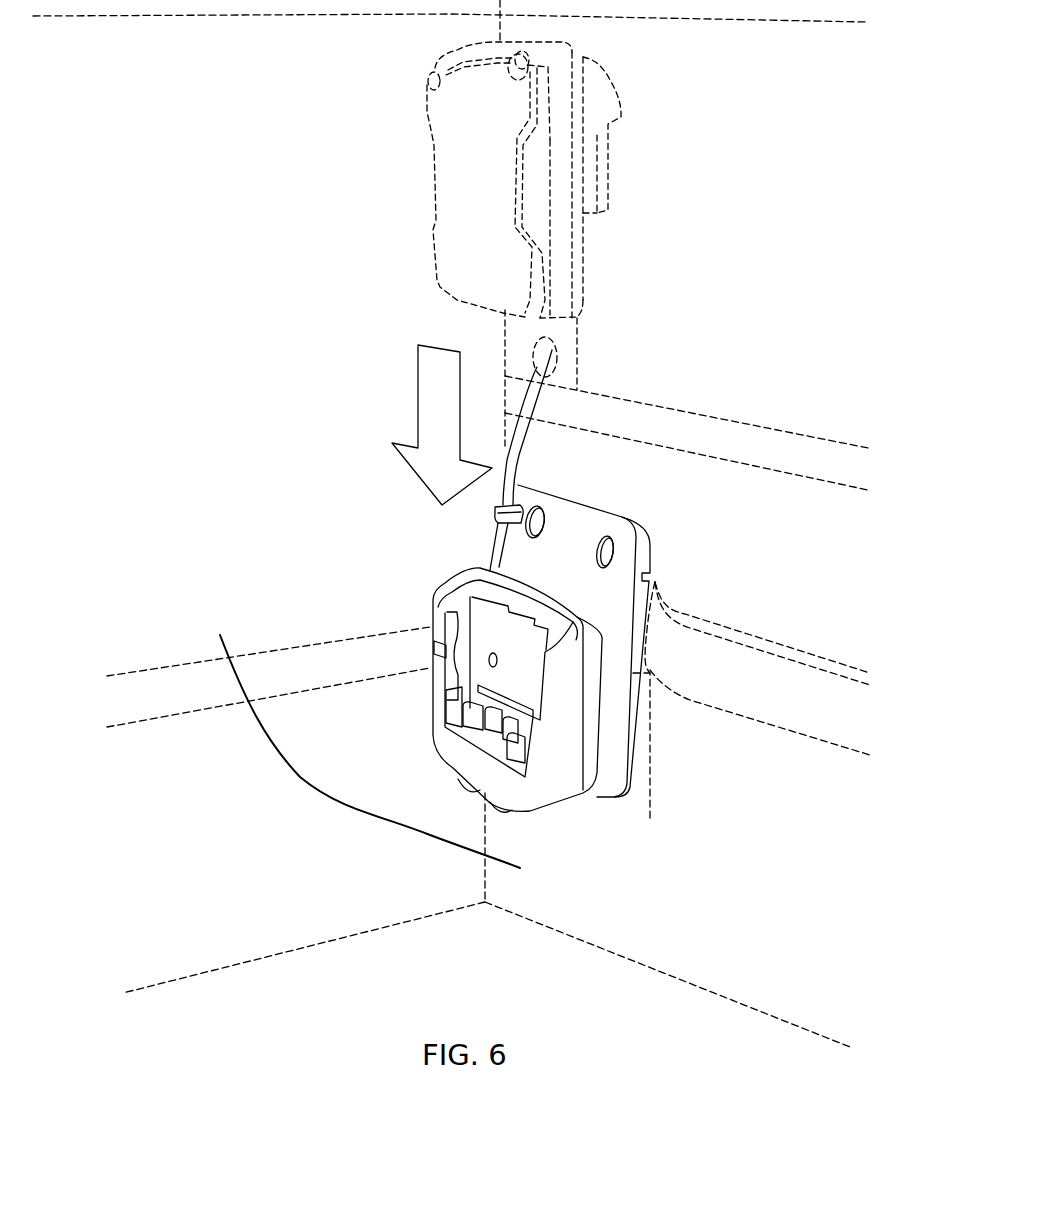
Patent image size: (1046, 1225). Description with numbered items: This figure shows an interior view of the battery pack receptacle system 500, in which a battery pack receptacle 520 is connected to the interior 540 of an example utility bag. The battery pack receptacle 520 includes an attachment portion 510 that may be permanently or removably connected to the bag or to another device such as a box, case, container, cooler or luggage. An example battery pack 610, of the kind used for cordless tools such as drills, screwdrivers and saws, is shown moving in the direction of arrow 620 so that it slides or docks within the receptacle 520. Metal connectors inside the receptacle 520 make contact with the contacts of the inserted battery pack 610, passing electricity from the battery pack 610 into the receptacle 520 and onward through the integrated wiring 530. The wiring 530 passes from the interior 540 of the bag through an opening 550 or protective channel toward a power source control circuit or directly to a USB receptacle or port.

The battery pack receptacle system 500 is at (728, 137).
The attachment portion 510 is at (573, 520).
The battery pack receptacle 520 is at (444, 587).
The integrated wiring 530 is at (538, 390).
The interior of utility bag 540 is at (356, 733).
The opening 550 is at (548, 351).
The battery pack 610 is at (443, 128).
The arrow 620 is at (435, 405).